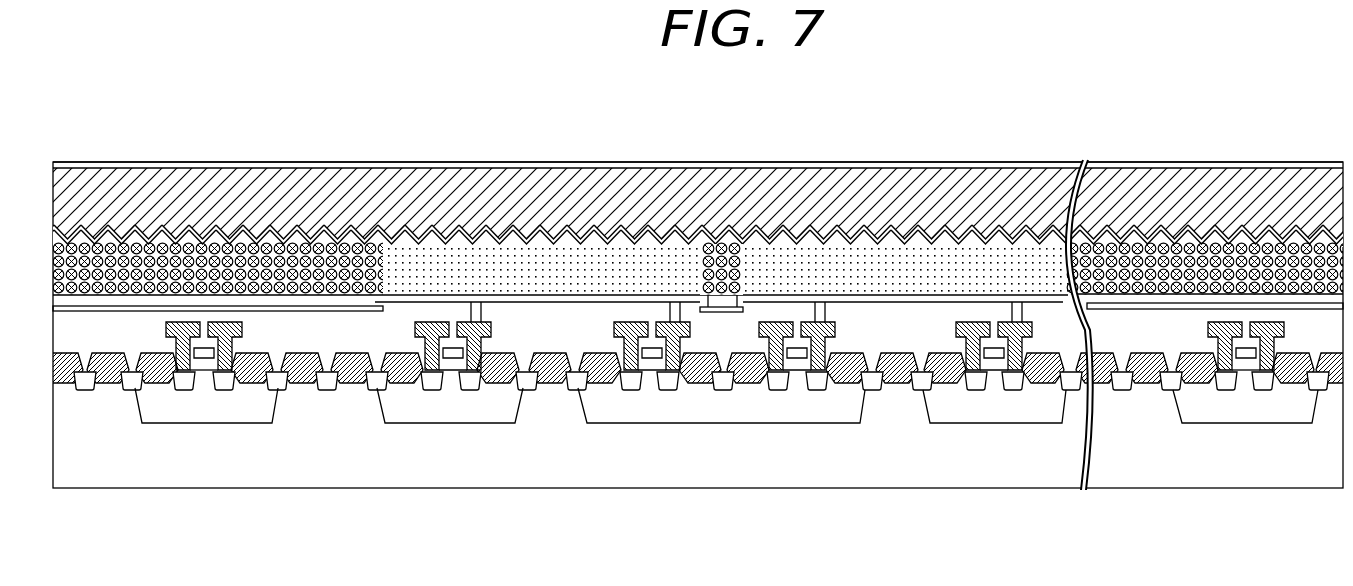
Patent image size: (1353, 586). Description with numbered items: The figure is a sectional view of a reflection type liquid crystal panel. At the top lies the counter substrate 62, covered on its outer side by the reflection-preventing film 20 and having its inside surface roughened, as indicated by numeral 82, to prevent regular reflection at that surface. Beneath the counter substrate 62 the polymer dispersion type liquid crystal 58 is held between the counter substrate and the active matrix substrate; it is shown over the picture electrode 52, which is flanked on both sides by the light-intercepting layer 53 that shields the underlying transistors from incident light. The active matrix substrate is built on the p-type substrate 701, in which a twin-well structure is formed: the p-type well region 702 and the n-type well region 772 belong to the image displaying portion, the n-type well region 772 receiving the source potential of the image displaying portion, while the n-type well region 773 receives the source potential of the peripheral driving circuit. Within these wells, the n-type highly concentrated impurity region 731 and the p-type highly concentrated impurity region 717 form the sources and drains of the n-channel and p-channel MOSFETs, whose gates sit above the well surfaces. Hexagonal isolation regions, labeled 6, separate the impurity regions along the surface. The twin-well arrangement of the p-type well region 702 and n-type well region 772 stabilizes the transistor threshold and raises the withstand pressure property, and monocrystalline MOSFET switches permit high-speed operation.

The pixel electrode 6 is at (253, 353).
The reflection-preventing film 20 is at (1010, 168).
The picture electrode 52 is at (515, 295).
The light-intercepting layer 53 is at (165, 306).
The polymer dispersion type liquid crystal 58 is at (684, 270).
The counter substrate 62 is at (957, 193).
The roughened inside surface 82 is at (890, 224).
The p-type substrate 701 is at (980, 453).
The p-type well region 702 is at (412, 413).
The p-type highly concentrated impurity region 717 is at (373, 390).
The n-type highly concentrated impurity region 731 is at (325, 390).
The n-type well region 772 is at (778, 413).
The n-type well region 773 is at (255, 413).